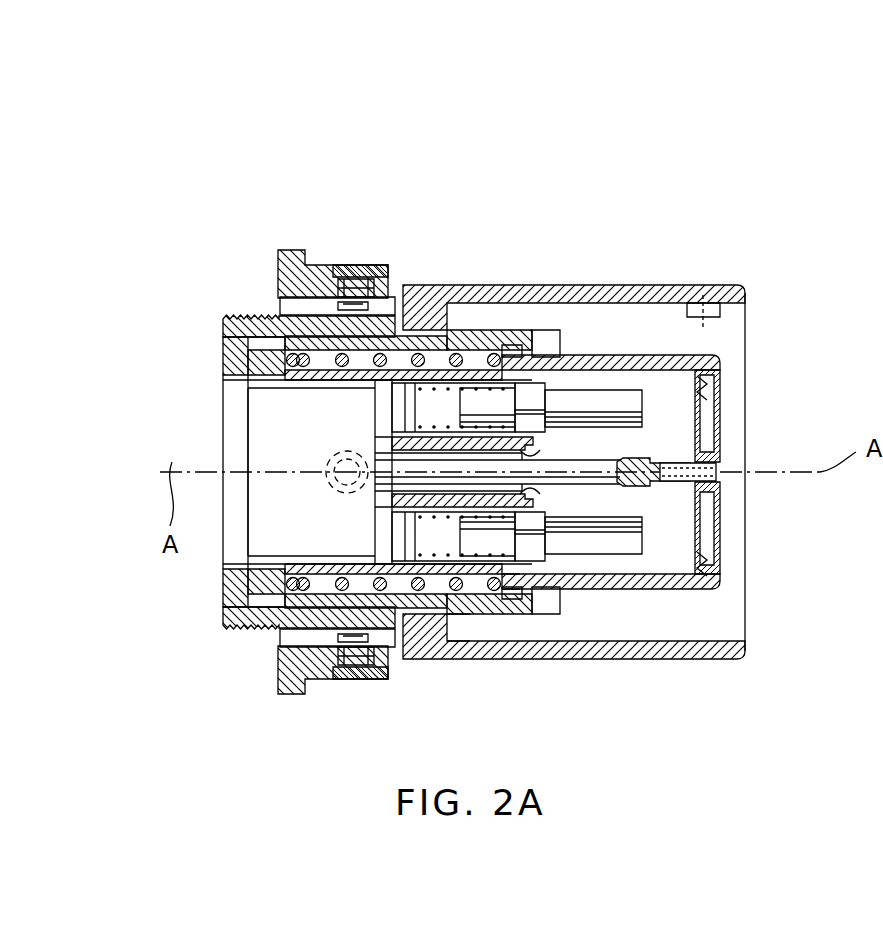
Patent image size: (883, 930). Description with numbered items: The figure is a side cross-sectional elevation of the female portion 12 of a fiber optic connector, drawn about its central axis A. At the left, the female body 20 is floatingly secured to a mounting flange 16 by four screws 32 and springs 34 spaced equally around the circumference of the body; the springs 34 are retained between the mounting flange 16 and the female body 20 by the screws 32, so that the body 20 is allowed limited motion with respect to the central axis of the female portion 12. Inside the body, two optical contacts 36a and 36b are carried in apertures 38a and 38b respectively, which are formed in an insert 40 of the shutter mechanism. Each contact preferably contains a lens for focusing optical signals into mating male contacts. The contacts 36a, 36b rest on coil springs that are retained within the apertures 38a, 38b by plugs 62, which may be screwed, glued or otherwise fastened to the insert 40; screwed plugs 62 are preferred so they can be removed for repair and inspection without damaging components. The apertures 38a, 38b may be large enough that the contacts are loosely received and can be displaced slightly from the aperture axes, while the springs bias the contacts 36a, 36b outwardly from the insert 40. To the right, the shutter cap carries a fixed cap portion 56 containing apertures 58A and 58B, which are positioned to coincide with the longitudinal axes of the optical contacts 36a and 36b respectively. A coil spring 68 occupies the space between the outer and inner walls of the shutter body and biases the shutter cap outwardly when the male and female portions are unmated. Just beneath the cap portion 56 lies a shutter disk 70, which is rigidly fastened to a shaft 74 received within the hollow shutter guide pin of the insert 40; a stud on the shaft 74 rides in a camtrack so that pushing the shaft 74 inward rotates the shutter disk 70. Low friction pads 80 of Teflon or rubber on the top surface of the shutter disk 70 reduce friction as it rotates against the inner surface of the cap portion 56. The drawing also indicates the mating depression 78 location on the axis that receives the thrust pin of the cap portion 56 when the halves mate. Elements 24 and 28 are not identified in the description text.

The female portion 12 is at (556, 233).
The mounting flange 16 is at (288, 250).
The female body 20 is at (612, 285).
The housing bottom wall 24 is at (730, 651).
The retaining lip 28 is at (722, 314).
The screws 32 is at (351, 266).
The springs 34 is at (395, 300).
The optical contact 36a is at (650, 396).
The optical contact 36b is at (640, 560).
The aperture 38a is at (415, 397).
The aperture 38b is at (408, 540).
The insert 40 is at (348, 448).
The cap portion 56 is at (720, 383).
The aperture 58A is at (712, 408).
The aperture 58B is at (712, 540).
The plugs 62 is at (373, 420).
The coil spring 68 is at (484, 613).
The shutter disk 70 is at (692, 553).
The shaft 74 is at (654, 457).
The mating depression 78 is at (714, 470).
The low friction pads 80 is at (708, 379).